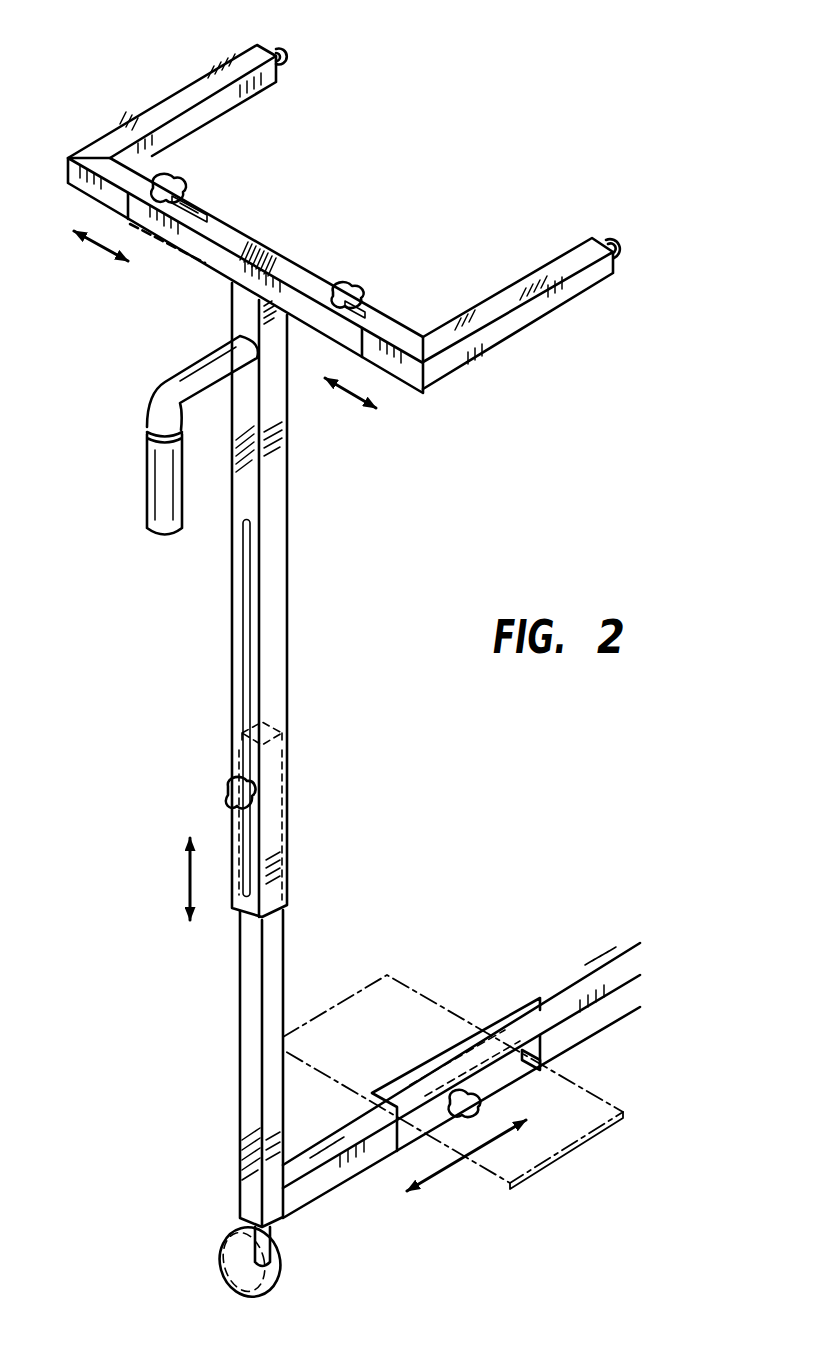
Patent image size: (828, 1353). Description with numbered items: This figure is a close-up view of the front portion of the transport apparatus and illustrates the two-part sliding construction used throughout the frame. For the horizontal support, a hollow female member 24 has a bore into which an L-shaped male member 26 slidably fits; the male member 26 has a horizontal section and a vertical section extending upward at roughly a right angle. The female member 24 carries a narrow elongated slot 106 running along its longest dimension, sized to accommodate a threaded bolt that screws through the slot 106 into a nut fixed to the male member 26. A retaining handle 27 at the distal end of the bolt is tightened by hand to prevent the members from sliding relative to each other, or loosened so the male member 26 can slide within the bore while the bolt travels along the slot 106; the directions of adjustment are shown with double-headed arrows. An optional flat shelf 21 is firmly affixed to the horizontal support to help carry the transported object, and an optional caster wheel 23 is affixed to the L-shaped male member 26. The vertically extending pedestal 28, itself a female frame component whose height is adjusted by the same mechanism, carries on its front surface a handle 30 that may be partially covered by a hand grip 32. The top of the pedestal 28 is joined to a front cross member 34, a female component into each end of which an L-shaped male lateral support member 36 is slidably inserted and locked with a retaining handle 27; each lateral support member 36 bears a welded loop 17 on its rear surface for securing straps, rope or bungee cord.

The loop 17 is at (289, 50).
The flat shelf 21 is at (580, 1122).
The caster wheel 23 is at (226, 1252).
The female member 24 is at (517, 1027).
The L-shaped male member 26 is at (238, 990).
The retaining handle 27 is at (162, 180).
The vertically extending pedestal 28 is at (283, 603).
The handle 30 is at (150, 402).
The hand grip 32 is at (143, 535).
The front cross member 34 is at (210, 262).
The L-shaped male lateral support member 36 is at (195, 96).
The slot 106 is at (537, 1065).